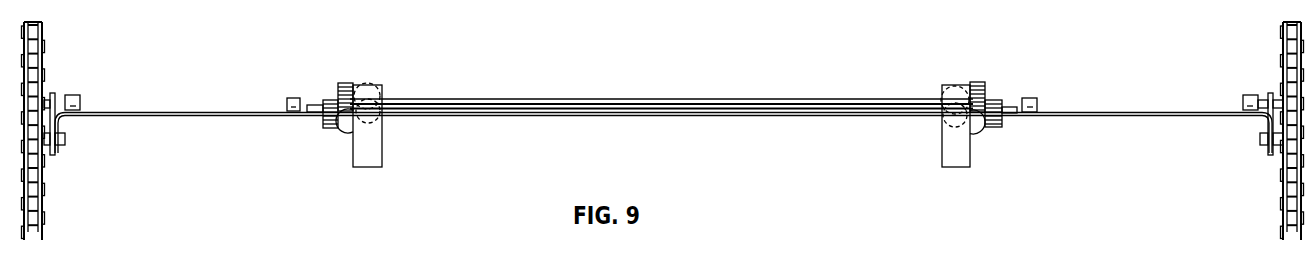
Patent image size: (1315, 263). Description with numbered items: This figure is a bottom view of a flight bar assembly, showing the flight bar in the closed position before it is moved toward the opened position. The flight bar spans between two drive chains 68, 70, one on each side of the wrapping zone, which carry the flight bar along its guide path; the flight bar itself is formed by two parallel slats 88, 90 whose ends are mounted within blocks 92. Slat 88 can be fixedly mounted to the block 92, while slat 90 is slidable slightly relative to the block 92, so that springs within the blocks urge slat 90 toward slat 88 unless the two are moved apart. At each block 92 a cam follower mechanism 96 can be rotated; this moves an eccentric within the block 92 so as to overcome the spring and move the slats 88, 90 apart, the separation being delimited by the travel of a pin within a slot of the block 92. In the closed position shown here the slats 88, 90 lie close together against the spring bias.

The chain 68 is at (1283, 33).
The chain 70 is at (42, 33).
The slat 88 is at (497, 116).
The slat 90 is at (462, 98).
The block 92 is at (368, 168).
The cam follower mechanism 96 is at (342, 130).